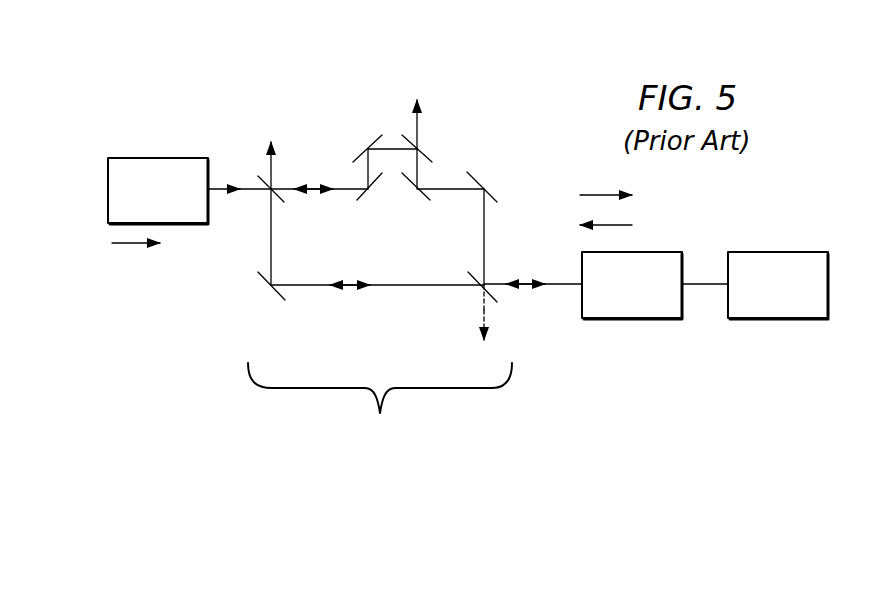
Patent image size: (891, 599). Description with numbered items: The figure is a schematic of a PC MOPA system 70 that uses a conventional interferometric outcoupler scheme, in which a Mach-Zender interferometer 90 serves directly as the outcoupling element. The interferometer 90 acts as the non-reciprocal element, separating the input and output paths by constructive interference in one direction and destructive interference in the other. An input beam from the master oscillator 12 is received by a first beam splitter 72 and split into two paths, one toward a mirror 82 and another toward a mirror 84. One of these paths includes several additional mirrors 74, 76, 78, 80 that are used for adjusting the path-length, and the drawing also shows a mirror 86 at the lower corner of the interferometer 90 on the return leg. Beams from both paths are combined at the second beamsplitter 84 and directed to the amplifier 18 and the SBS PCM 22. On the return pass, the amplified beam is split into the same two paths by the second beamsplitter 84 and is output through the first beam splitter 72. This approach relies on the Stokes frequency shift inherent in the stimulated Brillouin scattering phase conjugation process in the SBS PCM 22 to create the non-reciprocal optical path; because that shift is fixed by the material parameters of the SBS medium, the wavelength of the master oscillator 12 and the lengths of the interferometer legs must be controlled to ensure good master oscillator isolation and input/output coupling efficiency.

The PC MOPA system 70 is at (580, 105).
The master oscillator 12 is at (160, 157).
The first beam splitter 72 is at (262, 178).
The mirror 74 is at (360, 194).
The mirror 76 is at (365, 141).
The mirror 78 is at (410, 132).
The mirror 80 is at (428, 195).
The mirror 82 is at (479, 176).
The second beamsplitter 84 is at (490, 291).
The mirror 86 is at (268, 275).
The Mach-Zender interferometer 90 is at (391, 456).
The amplifier 18 is at (630, 318).
The SBS PCM 22 is at (777, 318).